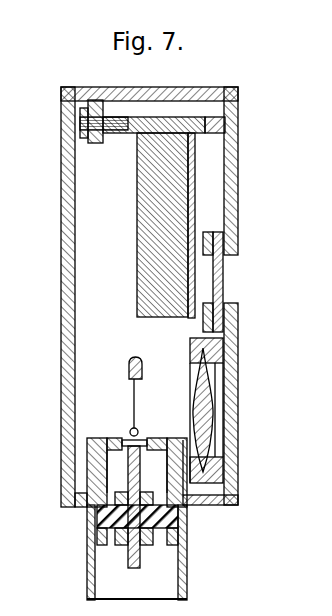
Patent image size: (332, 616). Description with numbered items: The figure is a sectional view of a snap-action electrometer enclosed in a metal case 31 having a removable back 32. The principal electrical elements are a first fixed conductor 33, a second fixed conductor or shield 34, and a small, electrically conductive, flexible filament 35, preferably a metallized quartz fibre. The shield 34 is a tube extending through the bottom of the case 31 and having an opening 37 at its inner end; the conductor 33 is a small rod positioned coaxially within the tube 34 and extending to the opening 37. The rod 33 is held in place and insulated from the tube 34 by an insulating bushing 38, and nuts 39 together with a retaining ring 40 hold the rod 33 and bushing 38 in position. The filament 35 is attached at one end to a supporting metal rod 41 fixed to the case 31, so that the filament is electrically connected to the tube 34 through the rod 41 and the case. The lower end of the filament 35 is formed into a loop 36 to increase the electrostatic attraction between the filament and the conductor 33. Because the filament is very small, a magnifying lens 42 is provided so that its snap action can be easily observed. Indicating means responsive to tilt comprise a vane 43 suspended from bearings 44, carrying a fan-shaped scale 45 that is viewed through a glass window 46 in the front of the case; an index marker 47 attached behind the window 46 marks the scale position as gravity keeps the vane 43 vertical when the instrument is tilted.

The metal case 31 is at (168, 88).
The removable back 32 is at (62, 272).
The first fixed conductor 33 is at (128, 560).
The second fixed conductor or shield 34 is at (88, 468).
The flexible filament 35 is at (134, 402).
The loop 36 is at (130, 432).
The opening 37 is at (143, 439).
The insulating bushing 38 is at (97, 517).
The nuts 39 is at (152, 503).
The retaining ring 40 is at (97, 538).
The metal rod 41 is at (130, 366).
The magnifying lens 42 is at (213, 421).
The vane 43 is at (137, 229).
The bearings 44 is at (127, 118).
The fan-shaped scale 45 is at (196, 181).
The glass window 46 is at (222, 285).
The index marker 47 is at (204, 273).